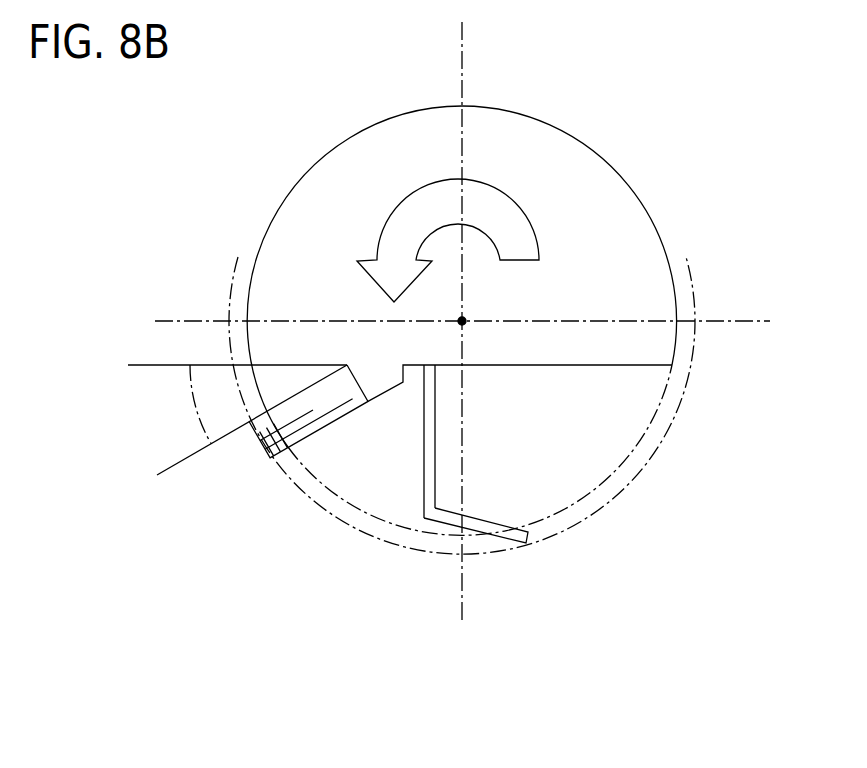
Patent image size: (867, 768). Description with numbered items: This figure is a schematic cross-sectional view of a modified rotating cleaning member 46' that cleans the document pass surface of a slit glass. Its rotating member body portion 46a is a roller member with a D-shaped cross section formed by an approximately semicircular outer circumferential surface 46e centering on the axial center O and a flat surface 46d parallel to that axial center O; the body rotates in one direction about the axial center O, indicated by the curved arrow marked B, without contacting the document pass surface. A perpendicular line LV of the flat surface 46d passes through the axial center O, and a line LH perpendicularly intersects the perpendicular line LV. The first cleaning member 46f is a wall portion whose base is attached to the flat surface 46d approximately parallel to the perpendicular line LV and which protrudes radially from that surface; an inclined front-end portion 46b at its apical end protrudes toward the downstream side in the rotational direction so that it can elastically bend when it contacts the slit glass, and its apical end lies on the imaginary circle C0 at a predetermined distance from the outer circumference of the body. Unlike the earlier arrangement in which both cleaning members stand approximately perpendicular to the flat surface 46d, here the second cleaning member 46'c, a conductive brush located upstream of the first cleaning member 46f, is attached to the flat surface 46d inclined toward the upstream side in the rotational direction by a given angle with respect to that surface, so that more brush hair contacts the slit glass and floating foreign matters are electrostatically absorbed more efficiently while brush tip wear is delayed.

The rotating cleaning member 46' is at (480, 279).
The rotating member body portion 46a is at (318, 190).
The inclined front-end portion 46b is at (503, 542).
The second cleaning member 46'c is at (308, 446).
The flat surface 46d is at (622, 366).
The outer circumferential surface 46e is at (625, 185).
The first cleaning member 46f is at (419, 428).
The imaginary circle C0 is at (375, 538).
The axial center O is at (465, 320).
The rotation direction B is at (448, 232).
The perpendicular line LV is at (461, 32).
The line LH is at (215, 320).